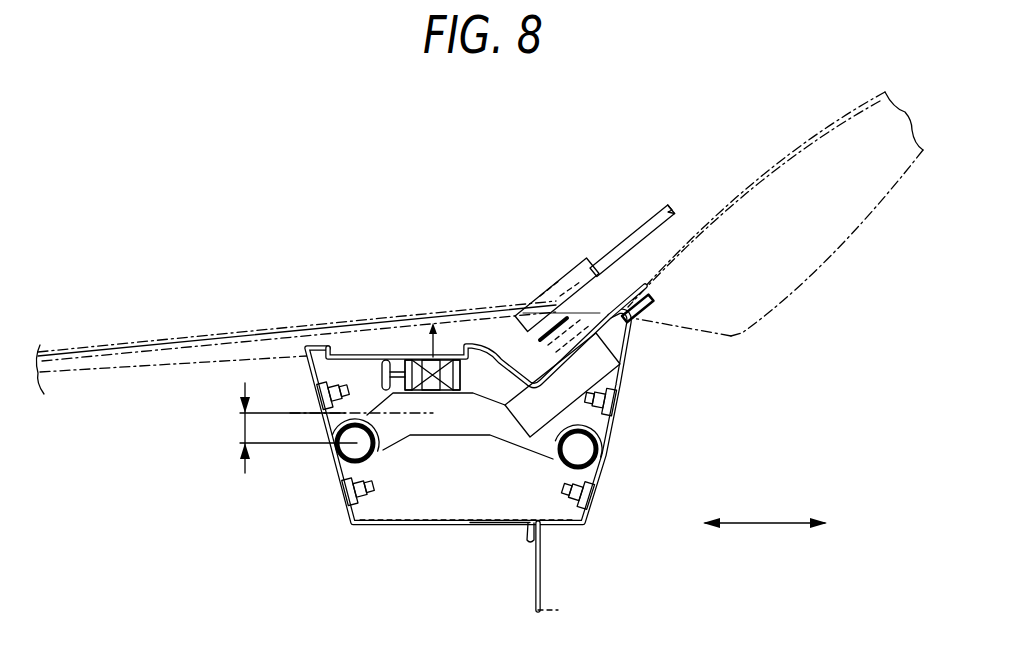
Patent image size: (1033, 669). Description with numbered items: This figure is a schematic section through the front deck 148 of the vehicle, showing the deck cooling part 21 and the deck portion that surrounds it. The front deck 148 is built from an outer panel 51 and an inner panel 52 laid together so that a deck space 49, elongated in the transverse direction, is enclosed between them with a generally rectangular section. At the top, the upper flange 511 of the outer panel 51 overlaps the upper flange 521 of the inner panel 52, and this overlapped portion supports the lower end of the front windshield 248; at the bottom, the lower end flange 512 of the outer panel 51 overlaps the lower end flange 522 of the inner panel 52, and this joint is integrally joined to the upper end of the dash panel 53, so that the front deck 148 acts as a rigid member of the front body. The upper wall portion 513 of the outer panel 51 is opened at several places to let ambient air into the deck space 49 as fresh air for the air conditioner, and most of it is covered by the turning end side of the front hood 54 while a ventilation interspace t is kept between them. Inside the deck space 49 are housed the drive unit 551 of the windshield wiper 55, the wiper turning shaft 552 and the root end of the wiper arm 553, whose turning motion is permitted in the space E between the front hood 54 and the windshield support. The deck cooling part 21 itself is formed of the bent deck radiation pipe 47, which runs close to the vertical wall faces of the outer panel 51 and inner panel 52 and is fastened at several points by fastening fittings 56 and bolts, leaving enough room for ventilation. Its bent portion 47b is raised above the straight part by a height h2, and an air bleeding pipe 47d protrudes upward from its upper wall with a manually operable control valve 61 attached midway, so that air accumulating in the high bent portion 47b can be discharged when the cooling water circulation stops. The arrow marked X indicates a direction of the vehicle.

The deck cooling part 21 is at (433, 489).
The deck radiation pipe 47 is at (514, 453).
The bent portion 47b is at (436, 436).
The air bleeding pipe 47d is at (480, 364).
The deck space 49 is at (488, 507).
The outer panel 51 is at (316, 384).
The inner panel 52 is at (625, 368).
The dash panel 53 is at (545, 566).
The front hood 54 is at (200, 350).
The windshield wiper 55 is at (610, 339).
The fastening fitting 56 is at (337, 468).
The control valve 61 is at (394, 360).
The front deck 148 is at (455, 436).
The front windshield 248 is at (757, 180).
The upper flange 511 is at (648, 288).
The lower end flange 512 is at (527, 542).
The upper wall portion 513 is at (470, 346).
The upper flange 521 is at (655, 311).
The lower end flange 522 is at (543, 560).
The drive unit 551 is at (597, 367).
The wiper turning shaft 552 is at (575, 287).
The wiper arm 553 is at (650, 227).
The space E is at (540, 297).
The ventilation interspace t is at (558, 313).
The height h2 is at (285, 428).
The X direction X is at (765, 509).